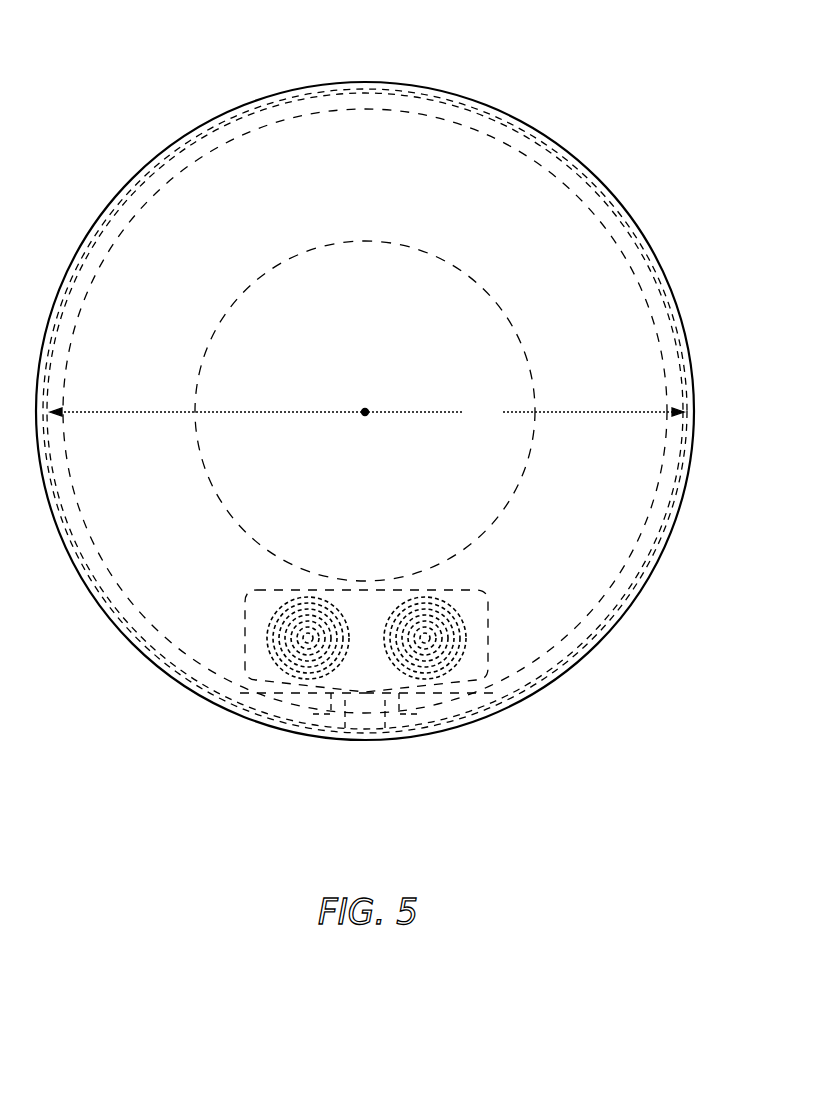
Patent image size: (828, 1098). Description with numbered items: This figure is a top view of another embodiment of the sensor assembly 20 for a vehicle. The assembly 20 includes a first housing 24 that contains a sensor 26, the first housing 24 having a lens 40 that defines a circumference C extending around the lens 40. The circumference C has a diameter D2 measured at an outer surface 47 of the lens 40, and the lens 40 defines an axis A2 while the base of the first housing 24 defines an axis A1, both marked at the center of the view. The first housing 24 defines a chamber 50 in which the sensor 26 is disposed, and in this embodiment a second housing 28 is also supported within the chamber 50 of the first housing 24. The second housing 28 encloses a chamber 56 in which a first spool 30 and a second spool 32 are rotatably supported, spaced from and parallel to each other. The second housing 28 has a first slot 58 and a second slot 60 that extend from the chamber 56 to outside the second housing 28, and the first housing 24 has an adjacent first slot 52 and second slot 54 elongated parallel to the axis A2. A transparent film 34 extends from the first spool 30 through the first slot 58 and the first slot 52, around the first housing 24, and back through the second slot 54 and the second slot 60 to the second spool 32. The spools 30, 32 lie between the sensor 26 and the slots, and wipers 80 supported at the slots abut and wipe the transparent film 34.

The assembly 20 is at (667, 86).
The first housing 24 is at (221, 113).
The sensor 26 is at (432, 250).
The second housing 28 is at (488, 622).
The first spool 30 is at (292, 610).
The second spool 32 is at (463, 606).
The transparent film 34 is at (183, 143).
The lens 40 is at (212, 140).
The outer surface 47 is at (621, 221).
The chamber 50 is at (613, 346).
The first slot 52 is at (338, 690).
The second slot 54 is at (396, 690).
The chamber 56 is at (455, 588).
The first slot 58 is at (258, 682).
The second slot 60 is at (492, 688).
The wipers 80 is at (394, 702).
The circumference C is at (509, 131).
The axis A1 is at (418, 386).
The axis A2 is at (367, 409).
The diameter D2 is at (367, 413).